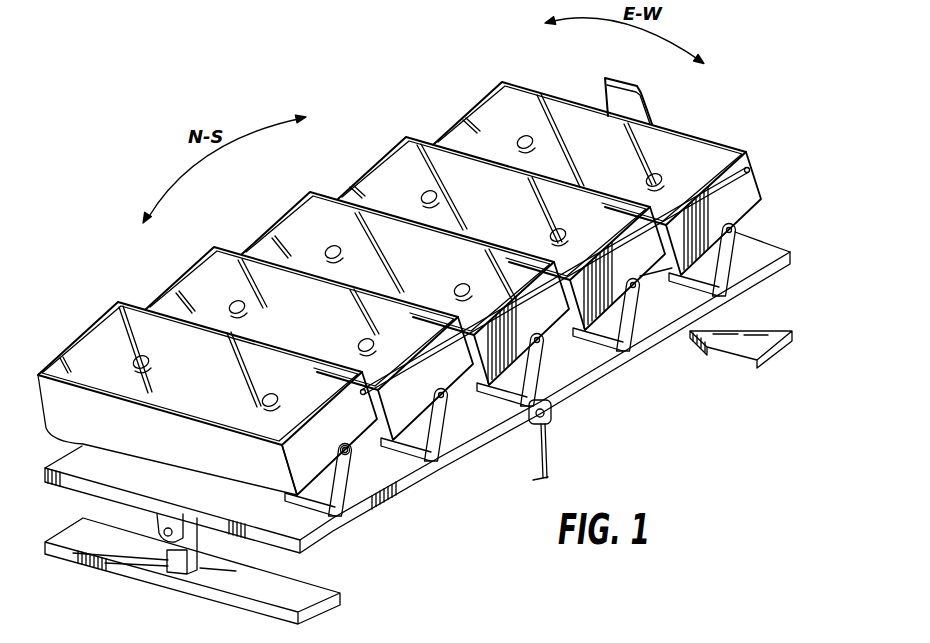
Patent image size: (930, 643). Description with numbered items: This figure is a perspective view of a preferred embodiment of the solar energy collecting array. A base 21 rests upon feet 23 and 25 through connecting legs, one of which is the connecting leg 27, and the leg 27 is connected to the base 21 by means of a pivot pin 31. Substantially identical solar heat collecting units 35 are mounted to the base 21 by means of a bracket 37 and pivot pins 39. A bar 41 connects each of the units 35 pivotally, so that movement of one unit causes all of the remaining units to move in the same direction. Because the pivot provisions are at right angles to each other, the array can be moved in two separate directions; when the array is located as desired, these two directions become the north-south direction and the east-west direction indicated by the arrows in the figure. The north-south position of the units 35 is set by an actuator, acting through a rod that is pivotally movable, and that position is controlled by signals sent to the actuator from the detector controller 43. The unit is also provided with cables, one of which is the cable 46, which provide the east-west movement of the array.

The base 21 is at (584, 364).
The foot 23 is at (305, 593).
The foot 25 is at (773, 332).
The connecting leg 27 is at (180, 568).
The pivot pin 31 is at (180, 492).
The solar heat collecting unit 35 is at (100, 318).
The bracket 37 is at (345, 492).
The pivot pin 39 is at (346, 447).
The bar 41 is at (687, 193).
The detector controller 43 is at (604, 83).
The cable 46 is at (544, 464).